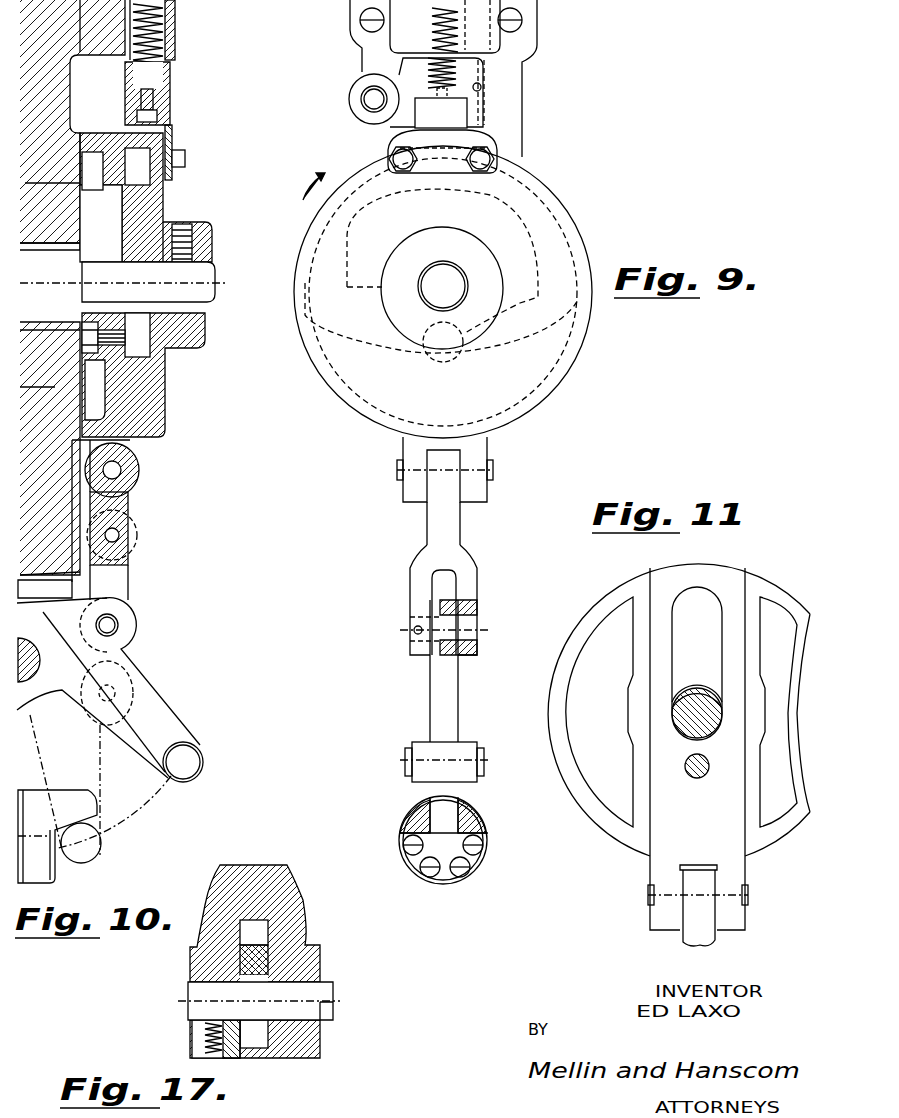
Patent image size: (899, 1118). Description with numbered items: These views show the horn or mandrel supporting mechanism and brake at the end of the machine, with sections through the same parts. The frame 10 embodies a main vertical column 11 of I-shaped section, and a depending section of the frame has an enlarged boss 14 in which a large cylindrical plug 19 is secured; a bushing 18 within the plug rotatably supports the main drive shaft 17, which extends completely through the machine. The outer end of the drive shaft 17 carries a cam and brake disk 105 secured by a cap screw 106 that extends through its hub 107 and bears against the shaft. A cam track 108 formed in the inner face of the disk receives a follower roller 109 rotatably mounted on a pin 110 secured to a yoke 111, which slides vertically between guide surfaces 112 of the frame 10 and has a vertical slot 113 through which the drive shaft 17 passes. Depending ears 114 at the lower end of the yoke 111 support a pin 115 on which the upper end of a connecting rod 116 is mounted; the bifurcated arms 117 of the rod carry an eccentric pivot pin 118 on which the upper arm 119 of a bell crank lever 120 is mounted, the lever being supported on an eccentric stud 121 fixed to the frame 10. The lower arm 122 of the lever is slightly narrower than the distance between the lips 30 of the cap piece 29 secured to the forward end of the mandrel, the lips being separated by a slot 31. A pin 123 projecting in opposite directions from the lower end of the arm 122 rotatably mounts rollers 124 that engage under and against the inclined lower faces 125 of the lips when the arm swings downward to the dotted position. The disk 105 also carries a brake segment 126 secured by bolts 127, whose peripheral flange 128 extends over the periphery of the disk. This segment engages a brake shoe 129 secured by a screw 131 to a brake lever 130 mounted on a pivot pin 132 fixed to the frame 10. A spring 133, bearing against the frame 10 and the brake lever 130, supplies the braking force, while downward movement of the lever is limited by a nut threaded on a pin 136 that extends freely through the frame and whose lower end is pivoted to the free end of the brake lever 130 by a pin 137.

In FIG. 17, the frame 10 is at (288, 866).
In FIG. 9, the frame 10 is at (480, 914).
In FIG. 10, the main vertical column 11 is at (118, 130).
In FIG. 11, the boss 14 is at (593, 820).
In FIG. 10, the main drive shaft 17 is at (205, 297).
In FIG. 9, the main drive shaft 17 is at (445, 277).
In FIG. 11, the main drive shaft 17 is at (705, 738).
In FIG. 10, the bushing 18 is at (58, 277).
In FIG. 10, the cylindrical plug 19 is at (48, 343).
In FIG. 9, the cap piece 29 is at (488, 860).
In FIG. 10, the lips or lugs 30 is at (95, 805).
In FIG. 9, the lips or lugs 30 is at (425, 815).
In FIG. 9, the slot 31 is at (450, 826).
In FIG. 10, the cam and brake disk 105 is at (150, 205).
In FIG. 9, the cam and brake disk 105 is at (553, 182).
In FIG. 10, the cap screw 106 is at (185, 222).
In FIG. 10, the hub 107 is at (205, 238).
In FIG. 9, the hub 107 is at (400, 327).
In FIG. 10, the cam track 108 is at (145, 170).
In FIG. 9, the cam track 108 is at (570, 212).
In FIG. 10, the follower roller 109 is at (140, 332).
In FIG. 9, the follower roller 109 is at (463, 353).
In FIG. 10, the pin 110 is at (115, 340).
In FIG. 10, the yoke 111 is at (115, 410).
In FIG. 11, the yoke 111 is at (710, 823).
In FIG. 11, the guide surfaces 112 is at (660, 636).
In FIG. 11, the vertical slot 113 is at (703, 590).
In FIG. 11, the depending ears 114 is at (668, 913).
In FIG. 10, the pin 115 is at (112, 470).
In FIG. 9, the pin 115 is at (400, 468).
In FIG. 11, the pin 115 is at (752, 890).
In FIG. 10, the connecting rod 116 is at (128, 527).
In FIG. 9, the connecting rod 116 is at (428, 518).
In FIG. 11, the connecting rod 116 is at (718, 936).
In FIG. 10, the bifurcated arms 117 is at (118, 590).
In FIG. 9, the bifurcated arms 117 is at (477, 580).
In FIG. 10, the eccentric pivot pin 118 is at (107, 625).
In FIG. 9, the eccentric pivot pin 118 is at (470, 630).
In FIG. 10, the upper arm 119 is at (133, 638).
In FIG. 10, the bell crank lever 120 is at (165, 697).
In FIG. 17, the bell crank lever 120 is at (262, 1058).
In FIG. 9, the bell crank lever 120 is at (448, 690).
In FIG. 10, the eccentric stud 121 is at (27, 665).
In FIG. 17, the eccentric stud 121 is at (300, 993).
In FIG. 10, the lower arm 122 is at (180, 733).
In FIG. 10, the pin 123 is at (203, 762).
In FIG. 9, the pin 123 is at (487, 752).
In FIG. 9, the rollers 124 is at (425, 742).
In FIG. 10, the inclined lower faces 125 is at (62, 852).
In FIG. 9, the brake segment 126 is at (483, 142).
In FIG. 10, the bolts 127 is at (185, 157).
In FIG. 9, the bolts 127 is at (420, 157).
In FIG. 10, the peripheral flange 128 is at (168, 122).
In FIG. 9, the peripheral flange 128 is at (483, 128).
In FIG. 10, the brake shoe 129 is at (172, 105).
In FIG. 9, the brake shoe 129 is at (477, 108).
In FIG. 9, the brake lever 130 is at (400, 78).
In FIG. 9, the screw 131 is at (400, 127).
In FIG. 9, the pivot pin 132 is at (370, 98).
In FIG. 9, the spring 133 is at (430, 34).
In FIG. 9, the pin 136 is at (523, 57).
In FIG. 9, the pin 137 is at (481, 87).